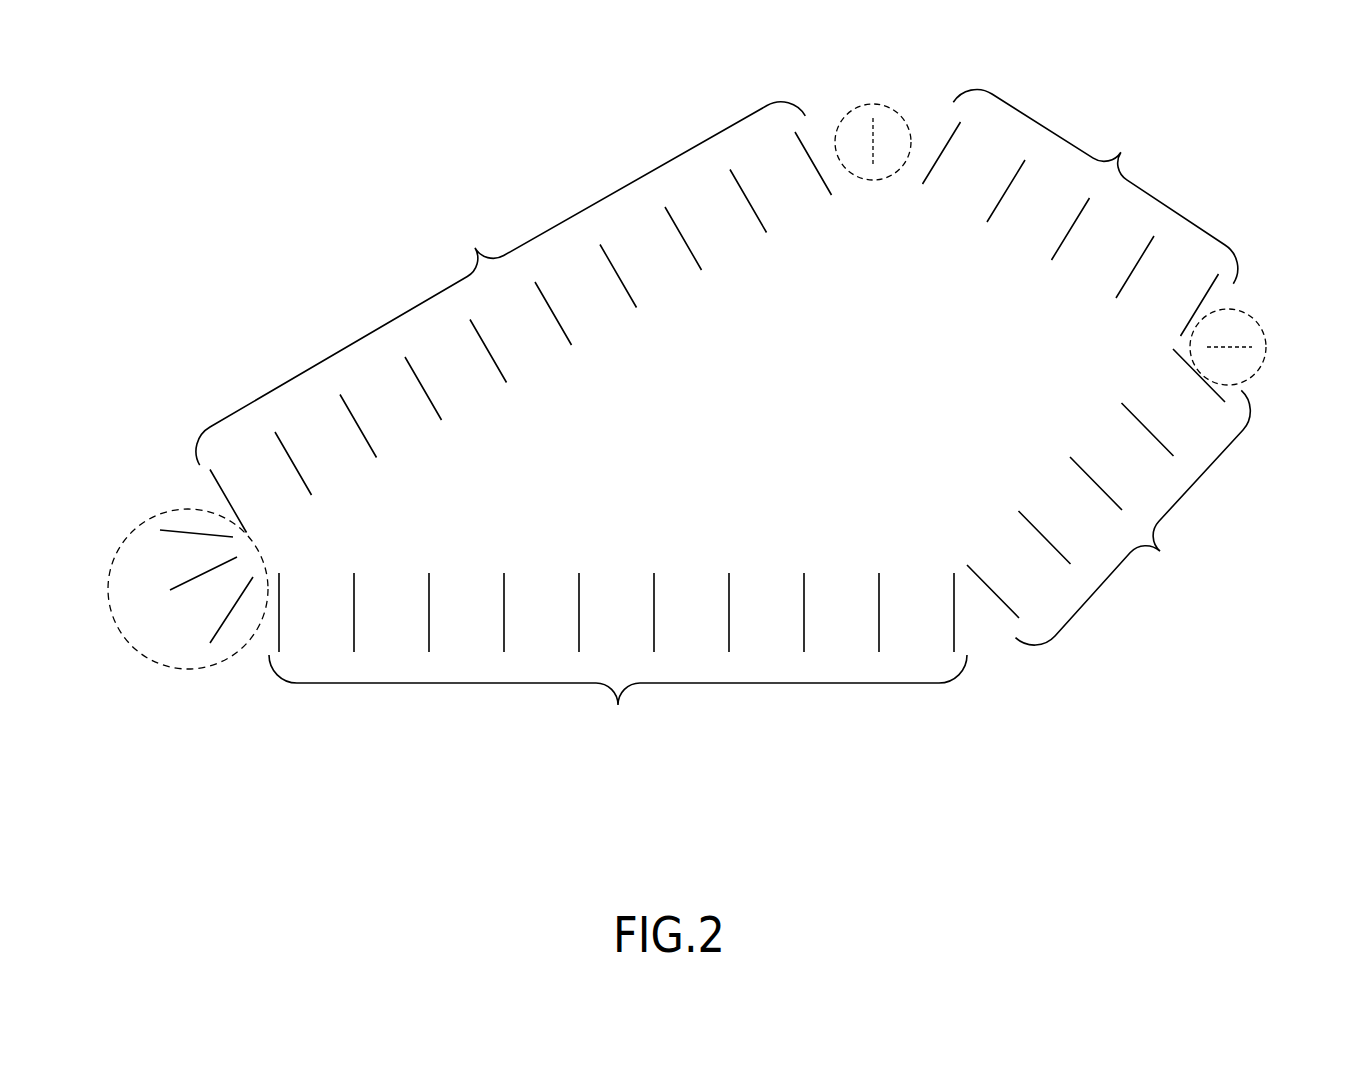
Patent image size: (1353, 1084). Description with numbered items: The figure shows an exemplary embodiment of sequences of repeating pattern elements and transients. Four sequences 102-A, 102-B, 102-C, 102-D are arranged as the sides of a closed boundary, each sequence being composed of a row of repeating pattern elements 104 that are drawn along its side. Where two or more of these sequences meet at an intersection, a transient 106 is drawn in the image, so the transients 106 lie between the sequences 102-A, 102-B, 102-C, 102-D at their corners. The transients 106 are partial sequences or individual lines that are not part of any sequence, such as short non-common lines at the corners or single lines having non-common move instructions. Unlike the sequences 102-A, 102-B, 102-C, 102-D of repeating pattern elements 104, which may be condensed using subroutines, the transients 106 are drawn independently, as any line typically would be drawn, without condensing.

The sequence 102-A is at (500, 283).
The sequence 102-B is at (1095, 187).
The sequence 102-C is at (1133, 517).
The sequence 102-D is at (618, 697).
The repeating pattern elements 104 is at (498, 367).
The transients 106 is at (890, 110).